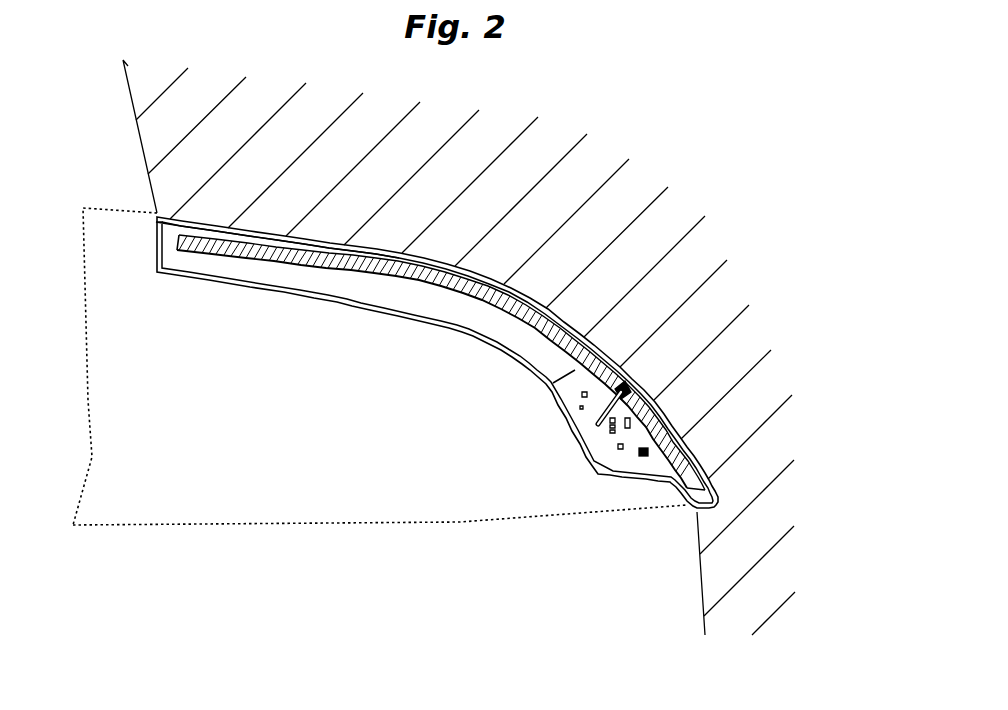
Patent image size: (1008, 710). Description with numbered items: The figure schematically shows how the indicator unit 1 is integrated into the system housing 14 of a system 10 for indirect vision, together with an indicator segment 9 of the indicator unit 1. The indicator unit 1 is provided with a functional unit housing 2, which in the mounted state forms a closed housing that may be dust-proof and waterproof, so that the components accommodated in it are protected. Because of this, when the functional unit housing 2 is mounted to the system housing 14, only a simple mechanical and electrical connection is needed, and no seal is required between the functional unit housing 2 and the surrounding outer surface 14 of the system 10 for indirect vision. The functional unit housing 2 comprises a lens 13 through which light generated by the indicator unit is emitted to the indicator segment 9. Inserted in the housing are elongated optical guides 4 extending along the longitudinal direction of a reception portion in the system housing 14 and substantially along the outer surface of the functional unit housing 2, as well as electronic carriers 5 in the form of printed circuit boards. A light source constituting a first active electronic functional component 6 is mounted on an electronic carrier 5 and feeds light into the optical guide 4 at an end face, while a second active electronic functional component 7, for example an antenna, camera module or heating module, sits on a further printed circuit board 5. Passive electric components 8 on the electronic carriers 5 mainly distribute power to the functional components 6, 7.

The indicator unit 1 is at (600, 490).
The functional unit housing 2 is at (233, 287).
The elongated optical guide 4 is at (323, 272).
The electronic carrier 5 is at (600, 462).
The first active electronic functional component 6 is at (628, 389).
The second active electronic functional component 7 is at (643, 456).
The passive electric component 8 is at (580, 408).
The indicator segment 9 is at (567, 199).
The system for indirect vision 10 is at (389, 467).
The lens 13 is at (270, 233).
The system housing 14 is at (177, 473).